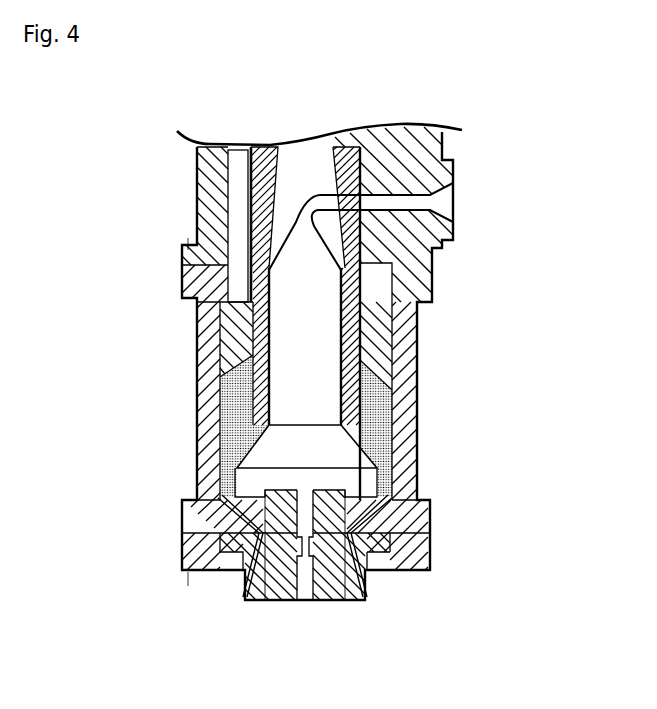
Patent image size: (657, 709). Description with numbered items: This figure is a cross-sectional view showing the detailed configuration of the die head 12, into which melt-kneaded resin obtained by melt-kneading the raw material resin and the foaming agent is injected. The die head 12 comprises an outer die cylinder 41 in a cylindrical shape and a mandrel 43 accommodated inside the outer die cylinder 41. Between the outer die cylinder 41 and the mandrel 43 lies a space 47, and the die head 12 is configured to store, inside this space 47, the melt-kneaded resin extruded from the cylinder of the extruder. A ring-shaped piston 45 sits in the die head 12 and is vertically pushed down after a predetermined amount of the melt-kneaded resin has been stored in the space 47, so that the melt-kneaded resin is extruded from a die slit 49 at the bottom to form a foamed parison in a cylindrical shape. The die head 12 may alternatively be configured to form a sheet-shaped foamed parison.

The die head 12 is at (510, 89).
The outer die cylinder 41 is at (196, 430).
The mandrel 43 is at (312, 340).
The ring-shaped piston 45 is at (197, 343).
The space 47 is at (378, 414).
The die slit 49 is at (360, 598).